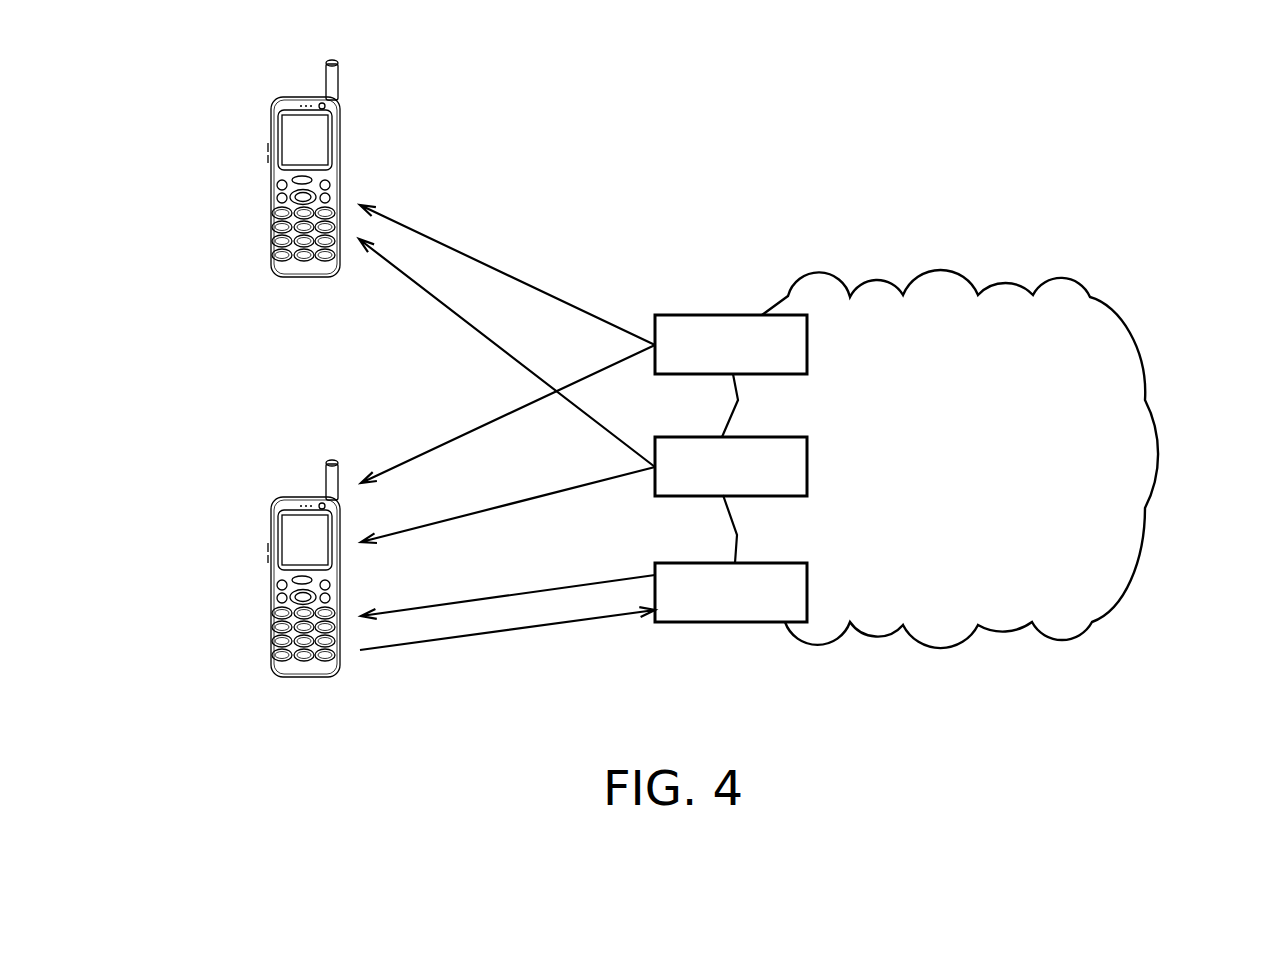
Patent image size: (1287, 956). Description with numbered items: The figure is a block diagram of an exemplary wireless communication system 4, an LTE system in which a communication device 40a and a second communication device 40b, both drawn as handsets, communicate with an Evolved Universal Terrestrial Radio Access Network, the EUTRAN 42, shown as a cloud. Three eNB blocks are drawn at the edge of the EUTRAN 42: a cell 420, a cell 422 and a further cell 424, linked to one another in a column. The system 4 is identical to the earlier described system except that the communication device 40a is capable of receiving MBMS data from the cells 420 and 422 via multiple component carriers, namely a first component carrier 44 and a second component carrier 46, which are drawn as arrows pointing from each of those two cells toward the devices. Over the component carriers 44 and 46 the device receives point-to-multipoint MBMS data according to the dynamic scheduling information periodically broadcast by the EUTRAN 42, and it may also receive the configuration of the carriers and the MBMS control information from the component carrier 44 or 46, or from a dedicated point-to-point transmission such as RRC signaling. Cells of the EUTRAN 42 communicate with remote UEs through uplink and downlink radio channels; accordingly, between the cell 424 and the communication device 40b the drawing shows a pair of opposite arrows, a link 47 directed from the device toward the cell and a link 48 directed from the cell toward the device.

The wireless communication system 4 is at (1150, 156).
The communication device 40a is at (271, 203).
The mobile device (UE) 40b is at (271, 603).
The EUTRAN 42 is at (942, 270).
The cell 420 is at (712, 315).
The cell 422 is at (677, 437).
The eNB 424 is at (677, 563).
The first component carrier 44 is at (516, 277).
The second component carrier 46 is at (415, 285).
The uplink transmission to eNB 424 47 is at (493, 630).
The downlink transmission from eNB 424 48 is at (560, 588).